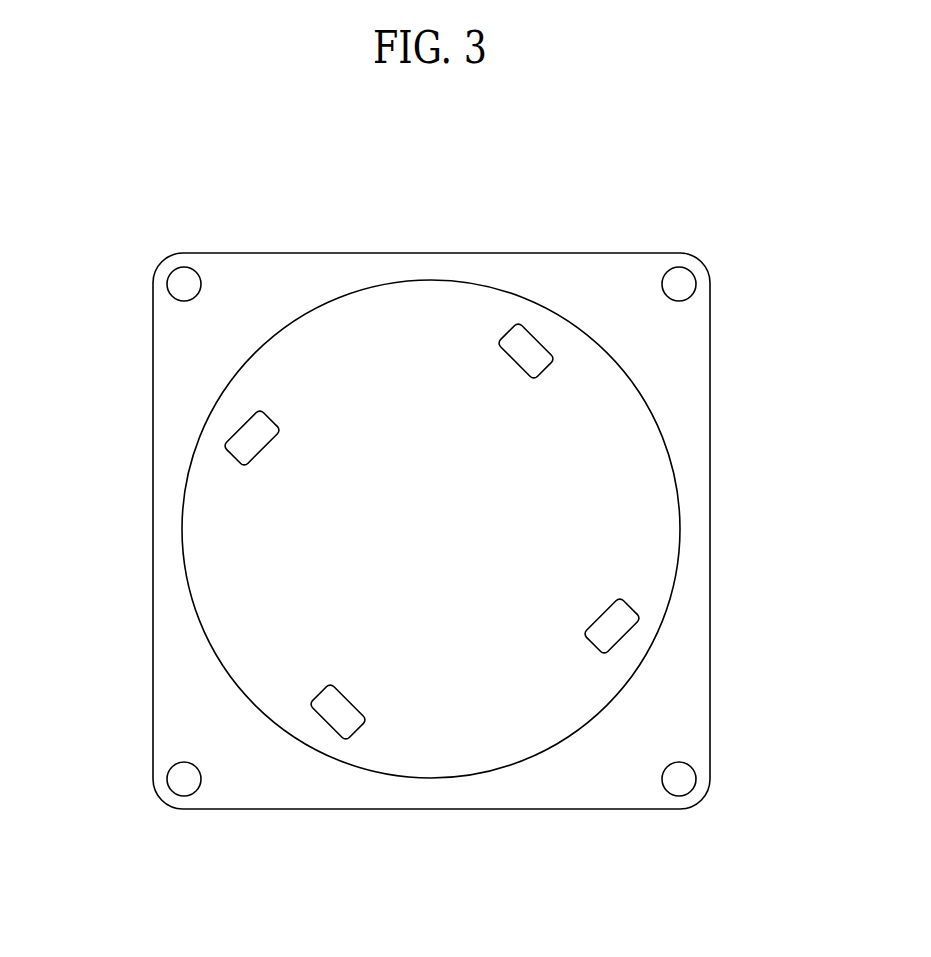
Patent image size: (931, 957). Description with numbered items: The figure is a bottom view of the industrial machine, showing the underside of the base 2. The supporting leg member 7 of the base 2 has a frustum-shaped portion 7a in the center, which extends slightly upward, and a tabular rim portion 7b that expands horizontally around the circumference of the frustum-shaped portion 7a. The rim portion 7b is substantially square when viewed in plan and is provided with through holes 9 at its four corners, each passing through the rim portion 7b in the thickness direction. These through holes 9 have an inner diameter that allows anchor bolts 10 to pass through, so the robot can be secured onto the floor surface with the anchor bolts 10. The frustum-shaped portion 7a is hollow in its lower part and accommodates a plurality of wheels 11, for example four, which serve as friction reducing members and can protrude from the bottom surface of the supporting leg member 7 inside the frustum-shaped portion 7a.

The base 2 is at (124, 210).
The supporting leg member 7 is at (146, 561).
The frustum-shaped portion 7a is at (682, 525).
The rim portion 7b is at (710, 446).
The through holes 9 is at (172, 277).
The anchor bolts 10 is at (172, 292).
The wheels 11 is at (221, 443).